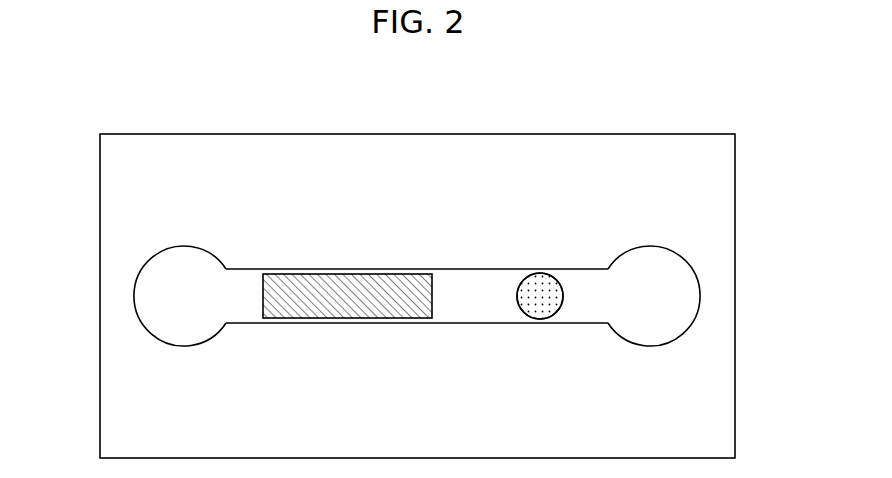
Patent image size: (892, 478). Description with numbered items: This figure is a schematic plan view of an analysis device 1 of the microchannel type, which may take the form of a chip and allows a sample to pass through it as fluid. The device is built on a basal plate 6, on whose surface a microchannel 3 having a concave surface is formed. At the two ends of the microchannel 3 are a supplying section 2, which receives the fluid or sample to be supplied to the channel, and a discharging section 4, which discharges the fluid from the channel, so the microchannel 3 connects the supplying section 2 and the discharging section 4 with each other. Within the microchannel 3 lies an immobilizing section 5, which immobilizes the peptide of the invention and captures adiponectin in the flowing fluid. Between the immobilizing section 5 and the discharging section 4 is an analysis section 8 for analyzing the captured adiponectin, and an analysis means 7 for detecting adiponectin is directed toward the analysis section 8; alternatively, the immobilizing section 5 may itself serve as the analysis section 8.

The analysis device 1 is at (729, 96).
The supplying section 2 is at (183, 262).
The microchannel 3 is at (476, 312).
The discharging section 4 is at (651, 260).
The immobilizing section 5 is at (346, 300).
The basal plate 6 is at (735, 219).
The analysis means 7 is at (541, 300).
The analysis section 8 is at (540, 296).